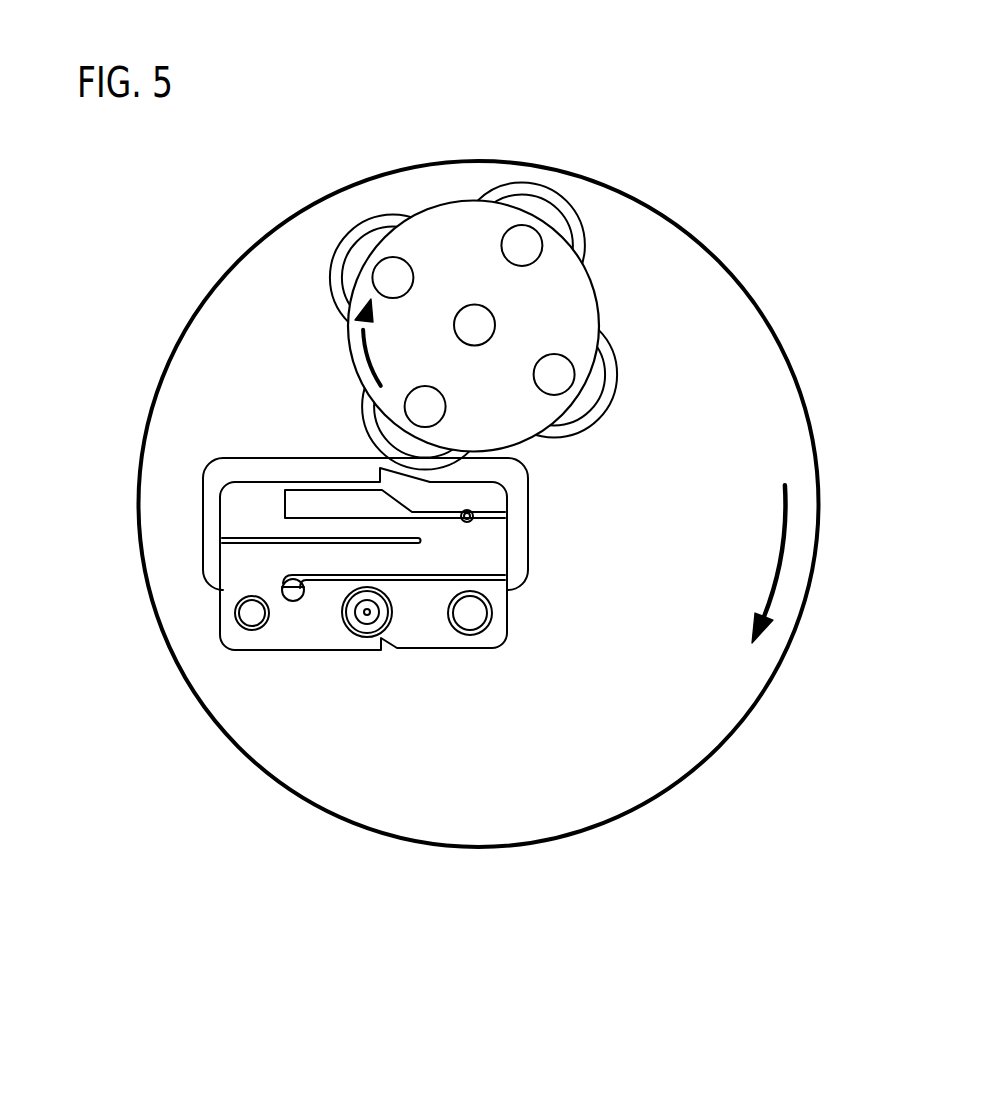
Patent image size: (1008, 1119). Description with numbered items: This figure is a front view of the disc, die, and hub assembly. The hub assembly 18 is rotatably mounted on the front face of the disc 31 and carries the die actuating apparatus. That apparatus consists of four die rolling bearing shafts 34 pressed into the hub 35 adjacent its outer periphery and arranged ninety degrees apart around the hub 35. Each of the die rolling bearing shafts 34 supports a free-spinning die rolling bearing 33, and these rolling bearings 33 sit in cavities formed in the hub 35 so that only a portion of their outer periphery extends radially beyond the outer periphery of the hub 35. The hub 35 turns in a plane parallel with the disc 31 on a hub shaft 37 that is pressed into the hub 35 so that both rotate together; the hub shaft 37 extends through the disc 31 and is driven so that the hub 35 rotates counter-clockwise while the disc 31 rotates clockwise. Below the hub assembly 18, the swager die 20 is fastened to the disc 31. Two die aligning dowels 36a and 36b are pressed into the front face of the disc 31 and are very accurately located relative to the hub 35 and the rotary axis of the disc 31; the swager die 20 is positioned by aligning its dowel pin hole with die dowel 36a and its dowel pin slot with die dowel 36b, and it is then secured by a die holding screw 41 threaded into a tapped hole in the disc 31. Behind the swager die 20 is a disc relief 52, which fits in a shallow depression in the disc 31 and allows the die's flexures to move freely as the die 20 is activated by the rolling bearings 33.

The hub assembly 18 is at (635, 272).
The swager die 20 is at (422, 627).
The disc 31 is at (723, 677).
The die rolling bearing 33 is at (607, 403).
The die rolling bearing shaft 34 is at (395, 276).
The hub 35 is at (423, 218).
The die aligning dowel 36a is at (248, 617).
The die aligning dowel 36b is at (472, 615).
The hub shaft 37 is at (483, 328).
The die holding screw 41 is at (367, 614).
The disc relief 52 is at (235, 460).